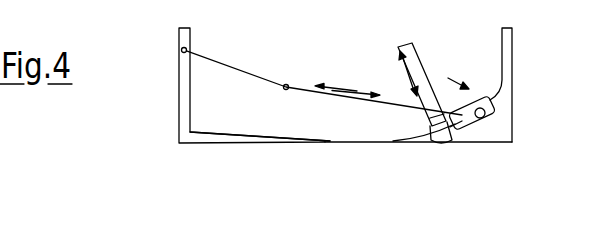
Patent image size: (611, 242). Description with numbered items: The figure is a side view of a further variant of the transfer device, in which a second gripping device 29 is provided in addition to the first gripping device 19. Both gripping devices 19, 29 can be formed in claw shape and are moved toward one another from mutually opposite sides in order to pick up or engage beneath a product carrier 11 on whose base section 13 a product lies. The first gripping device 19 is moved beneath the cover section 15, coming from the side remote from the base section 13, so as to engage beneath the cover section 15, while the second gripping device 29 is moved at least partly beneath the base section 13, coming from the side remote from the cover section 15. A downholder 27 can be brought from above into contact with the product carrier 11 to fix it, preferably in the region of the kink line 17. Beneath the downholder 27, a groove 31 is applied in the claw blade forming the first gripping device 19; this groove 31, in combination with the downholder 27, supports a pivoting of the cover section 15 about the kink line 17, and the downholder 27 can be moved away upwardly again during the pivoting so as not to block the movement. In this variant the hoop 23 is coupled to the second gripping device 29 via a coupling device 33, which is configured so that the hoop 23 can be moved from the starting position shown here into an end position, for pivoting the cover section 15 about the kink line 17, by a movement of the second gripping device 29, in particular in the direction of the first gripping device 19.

The product carrier 11 is at (333, 141).
The base section 13 is at (270, 138).
The cover section 15 is at (460, 106).
The kink line 17 is at (455, 128).
The first gripping device 19 is at (503, 77).
The hoop 23 is at (486, 114).
The downholder 27 is at (421, 65).
The second gripping device 29 is at (185, 105).
The groove 31 is at (438, 132).
The coupling device 33 is at (253, 76).